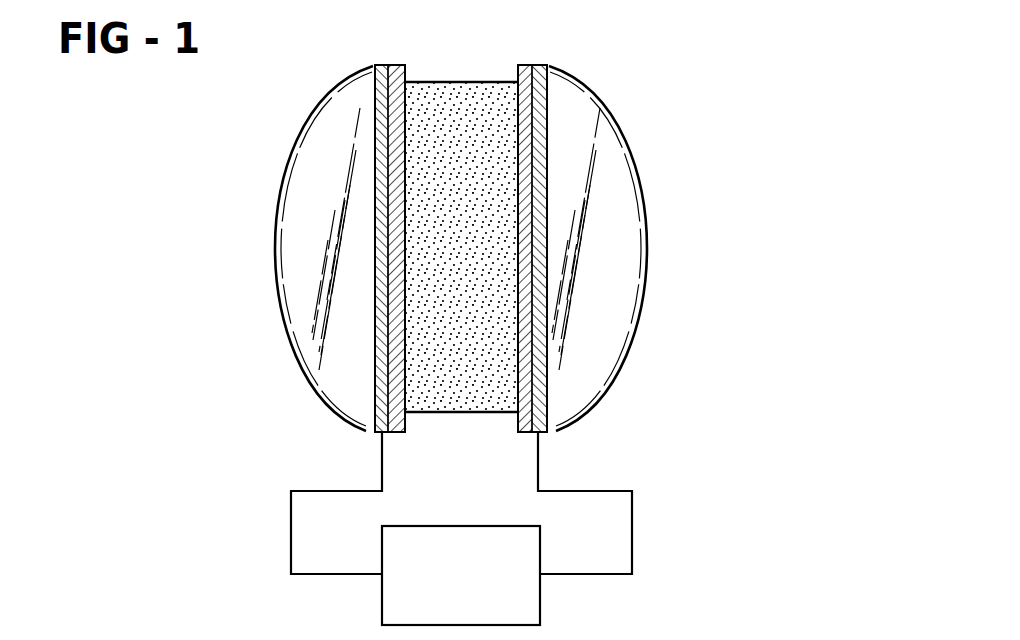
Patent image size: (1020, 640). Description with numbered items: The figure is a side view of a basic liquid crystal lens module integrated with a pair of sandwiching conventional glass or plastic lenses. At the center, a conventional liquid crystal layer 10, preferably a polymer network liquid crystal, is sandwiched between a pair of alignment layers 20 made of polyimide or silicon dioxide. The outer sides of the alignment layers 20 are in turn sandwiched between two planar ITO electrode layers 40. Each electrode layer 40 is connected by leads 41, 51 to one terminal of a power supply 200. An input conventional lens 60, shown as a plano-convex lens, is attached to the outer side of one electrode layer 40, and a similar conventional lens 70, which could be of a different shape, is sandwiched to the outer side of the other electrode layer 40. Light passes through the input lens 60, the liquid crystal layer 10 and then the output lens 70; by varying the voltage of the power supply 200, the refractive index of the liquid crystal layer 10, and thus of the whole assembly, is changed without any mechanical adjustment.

The liquid crystal layer 10 is at (459, 82).
The alignment layers 20 is at (398, 65).
The ITO electrode layers 40 is at (384, 65).
The input conventional lens 60 is at (303, 120).
The conventional lens 70 is at (648, 291).
The lead 41 is at (382, 446).
The lead 51 is at (538, 466).
The power supply 200 is at (450, 526).